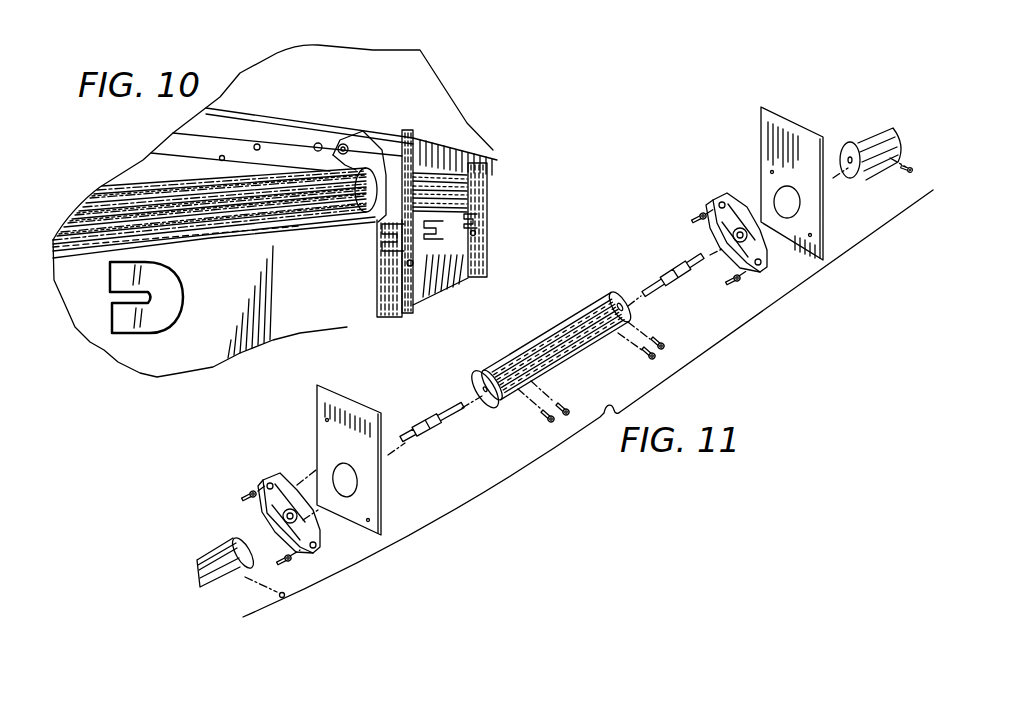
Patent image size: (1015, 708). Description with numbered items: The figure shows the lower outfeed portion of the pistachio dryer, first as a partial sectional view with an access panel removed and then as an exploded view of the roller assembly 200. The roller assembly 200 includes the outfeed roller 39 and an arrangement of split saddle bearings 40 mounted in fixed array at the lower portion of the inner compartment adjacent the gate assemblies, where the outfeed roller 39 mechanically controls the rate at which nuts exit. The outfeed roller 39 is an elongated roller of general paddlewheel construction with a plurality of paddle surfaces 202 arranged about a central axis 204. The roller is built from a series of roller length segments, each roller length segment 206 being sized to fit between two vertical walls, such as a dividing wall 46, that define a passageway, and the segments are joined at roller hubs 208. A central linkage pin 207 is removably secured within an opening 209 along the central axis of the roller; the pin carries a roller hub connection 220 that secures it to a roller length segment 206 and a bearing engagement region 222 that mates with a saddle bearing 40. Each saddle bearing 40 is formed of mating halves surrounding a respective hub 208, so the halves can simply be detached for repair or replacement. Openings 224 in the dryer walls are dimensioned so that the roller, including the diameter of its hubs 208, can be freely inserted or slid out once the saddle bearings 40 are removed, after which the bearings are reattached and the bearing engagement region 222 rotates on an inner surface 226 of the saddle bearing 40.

In FIG. 10, the outfeed roller 39 is at (333, 205).
In FIG. 11, the outfeed roller 39 is at (577, 324).
In FIG. 10, the split saddle bearing 40 is at (380, 181).
In FIG. 11, the split saddle bearing 40 is at (735, 205).
In FIG. 10, the dividing wall 46 is at (413, 150).
In FIG. 11, the dividing wall 46 is at (363, 402).
In FIG. 10, the roller assembly 200 is at (98, 182).
In FIG. 11, the roller assembly 200 is at (224, 475).
In FIG. 10, the paddle surfaces 202 is at (288, 182).
In FIG. 11, the paddle surfaces 202 is at (521, 366).
In FIG. 11, the central axis 204 is at (252, 537).
In FIG. 11, the roller length segment 206 is at (608, 377).
In FIG. 11, the central linkage pin 207 is at (430, 456).
In FIG. 10, the roller hub 208 is at (380, 238).
In FIG. 11, the roller hub 208 is at (217, 537).
In FIG. 11, the opening 209 is at (499, 402).
In FIG. 11, the roller hub connection 220 is at (408, 453).
In FIG. 11, the bearing engagement region 222 is at (490, 402).
In FIG. 11, the openings 224 is at (348, 490).
In FIG. 11, the inner surface 226 is at (300, 540).